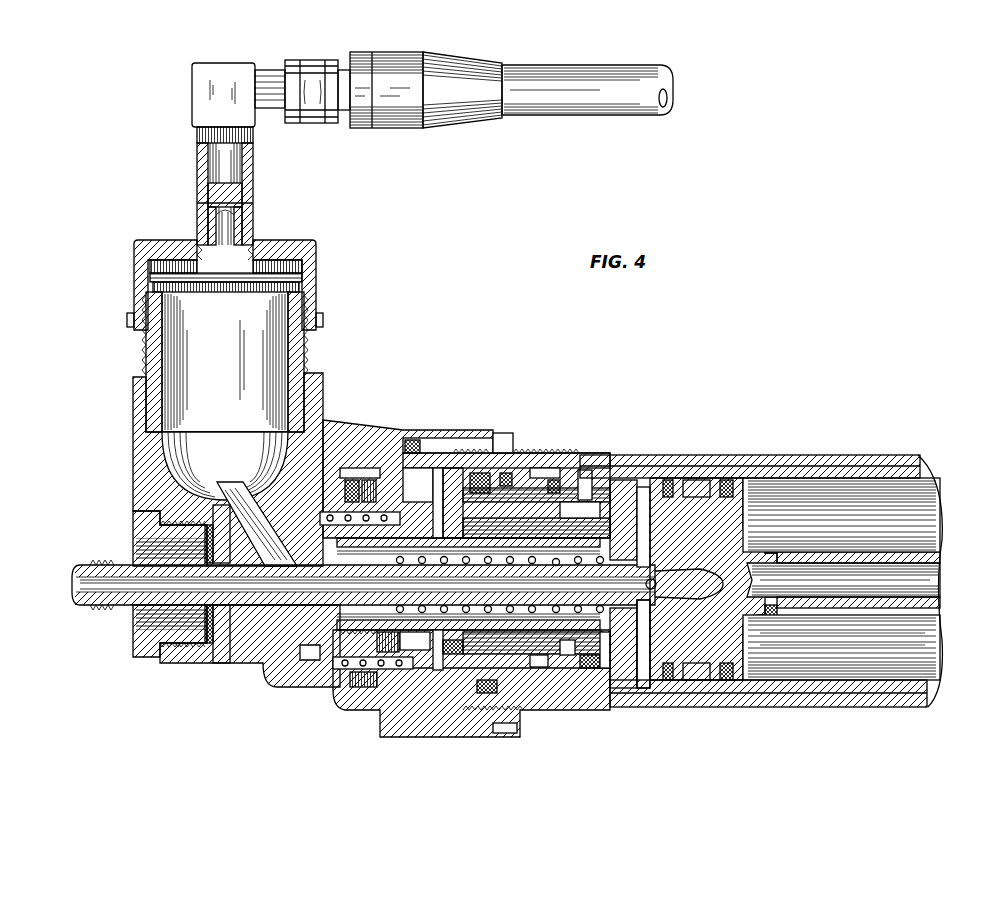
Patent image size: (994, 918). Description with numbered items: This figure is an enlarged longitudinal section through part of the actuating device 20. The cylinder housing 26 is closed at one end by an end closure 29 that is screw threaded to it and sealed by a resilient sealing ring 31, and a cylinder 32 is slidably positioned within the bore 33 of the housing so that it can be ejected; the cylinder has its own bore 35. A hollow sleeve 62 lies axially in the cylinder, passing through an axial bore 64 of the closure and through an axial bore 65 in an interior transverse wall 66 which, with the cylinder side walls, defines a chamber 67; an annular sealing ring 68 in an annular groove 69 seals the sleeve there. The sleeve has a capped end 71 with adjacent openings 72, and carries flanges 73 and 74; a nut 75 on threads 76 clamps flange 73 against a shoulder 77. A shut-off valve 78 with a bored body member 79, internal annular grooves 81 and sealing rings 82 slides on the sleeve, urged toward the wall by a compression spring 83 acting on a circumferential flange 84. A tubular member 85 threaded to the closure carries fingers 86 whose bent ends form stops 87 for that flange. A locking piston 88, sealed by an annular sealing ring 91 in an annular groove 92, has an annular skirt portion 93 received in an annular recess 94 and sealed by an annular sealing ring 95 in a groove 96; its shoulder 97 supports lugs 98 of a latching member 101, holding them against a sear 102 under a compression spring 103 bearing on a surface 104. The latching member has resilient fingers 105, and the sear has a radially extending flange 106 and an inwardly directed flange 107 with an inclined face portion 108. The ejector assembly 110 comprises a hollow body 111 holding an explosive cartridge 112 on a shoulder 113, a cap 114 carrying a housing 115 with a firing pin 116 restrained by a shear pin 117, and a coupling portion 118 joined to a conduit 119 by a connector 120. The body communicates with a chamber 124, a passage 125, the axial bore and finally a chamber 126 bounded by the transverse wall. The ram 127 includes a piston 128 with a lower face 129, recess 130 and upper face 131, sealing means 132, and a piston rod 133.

The actuating device 20 is at (866, 456).
The cylinder housing 26 is at (822, 456).
The end closure 29 is at (220, 666).
The resilient sealing ring 31 is at (418, 441).
The cylinder 32 is at (935, 681).
The bore 33 is at (870, 708).
The bore 35 is at (930, 506).
The sleeve 62 is at (92, 563).
The axial bore 64 is at (245, 646).
The axial bore 65 is at (606, 670).
The interior transverse wall 66 is at (622, 483).
The chamber 67 is at (822, 656).
The annular sealing ring 68 is at (641, 691).
The annular groove 69 is at (643, 501).
The capped end 71 is at (722, 601).
The openings 72 is at (660, 581).
The flange 73 is at (210, 664).
The flange 74 is at (335, 612).
The nut 75 is at (133, 515).
The threads 76 is at (160, 660).
The shoulder 77 is at (212, 645).
The shut-off valve 78 is at (568, 657).
The bored body member 79 is at (584, 471).
The internal annular grooves 81 is at (554, 480).
The sealing rings 82 is at (520, 613).
The compression spring 83 is at (438, 672).
The circumferential flange 84 is at (487, 695).
The tubular member 85 is at (415, 652).
The fingers 86 is at (455, 656).
The stops 87 is at (540, 668).
The locking piston 88 is at (330, 672).
The annular sealing ring 91 is at (540, 468).
The annular groove 92 is at (508, 473).
The annular skirt portion 93 is at (369, 481).
The annular recess 94 is at (330, 511).
The annular sealing ring 95 is at (368, 501).
The groove 96 is at (352, 481).
The shoulder 97 is at (365, 688).
The lugs 98 is at (410, 441).
The latching member 101 is at (568, 502).
The sear 102 is at (478, 473).
The compression spring 103 is at (305, 662).
The surface 104 is at (388, 653).
The resilient fingers 105 is at (505, 490).
The radially extending flange 106 is at (405, 471).
The inwardly directed flange 107 is at (438, 470).
The inclined face portion 108 is at (453, 470).
The ejector assembly 110 is at (140, 365).
The hollow body 111 is at (148, 341).
The explosive cartridge 112 is at (170, 396).
The shoulder 113 is at (148, 301).
The cap 114 is at (133, 253).
The housing 115 is at (205, 140).
The firing pin 116 is at (215, 190).
The shear pin 117 is at (205, 198).
The coupling portion 118 is at (268, 108).
The conduit 119 is at (620, 78).
The connector 120 is at (312, 75).
The chamber 124 is at (190, 471).
The passage 125 is at (142, 491).
The chamber 126 is at (590, 670).
The ram 127 is at (920, 556).
The piston 128 is at (755, 531).
The lower face 129 is at (675, 681).
The recess 130 is at (698, 683).
The upper face 131 is at (770, 641).
The sealing means 132 is at (695, 481).
The piston rod 133 is at (920, 606).